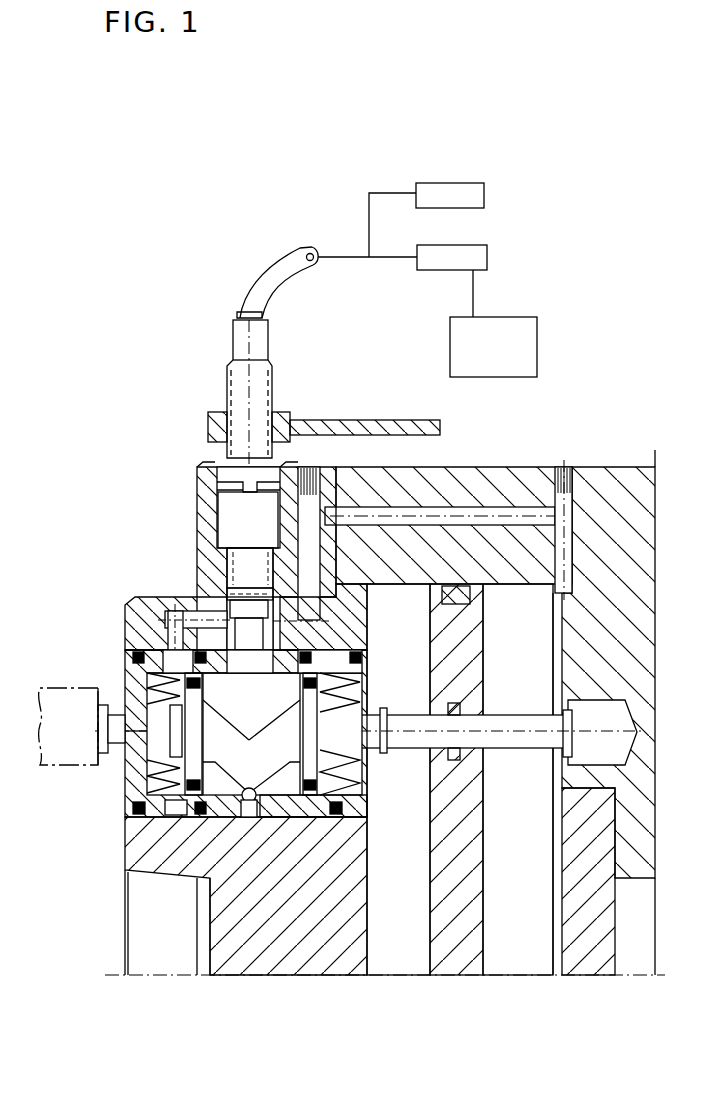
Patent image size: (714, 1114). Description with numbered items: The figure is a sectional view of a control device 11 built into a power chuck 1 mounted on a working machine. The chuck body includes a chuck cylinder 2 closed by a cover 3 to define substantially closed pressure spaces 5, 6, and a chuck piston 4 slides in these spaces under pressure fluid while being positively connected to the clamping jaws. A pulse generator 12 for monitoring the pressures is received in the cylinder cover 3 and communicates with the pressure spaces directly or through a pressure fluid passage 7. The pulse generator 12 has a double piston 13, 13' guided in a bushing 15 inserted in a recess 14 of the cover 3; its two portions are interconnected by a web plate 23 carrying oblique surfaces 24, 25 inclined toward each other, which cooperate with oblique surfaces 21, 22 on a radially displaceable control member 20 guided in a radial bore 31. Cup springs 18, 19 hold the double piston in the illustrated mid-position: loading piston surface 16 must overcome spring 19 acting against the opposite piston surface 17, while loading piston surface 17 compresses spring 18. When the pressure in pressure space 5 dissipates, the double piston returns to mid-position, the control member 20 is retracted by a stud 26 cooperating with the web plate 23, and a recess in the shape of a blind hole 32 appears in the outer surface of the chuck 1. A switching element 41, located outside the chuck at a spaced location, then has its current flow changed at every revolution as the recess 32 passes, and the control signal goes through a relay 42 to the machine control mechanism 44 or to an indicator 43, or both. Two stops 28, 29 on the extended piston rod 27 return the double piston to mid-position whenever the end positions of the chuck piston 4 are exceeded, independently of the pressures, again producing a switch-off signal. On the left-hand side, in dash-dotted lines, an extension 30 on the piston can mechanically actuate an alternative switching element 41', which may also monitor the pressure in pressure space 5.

The power chuck 1 is at (500, 467).
The chuck cylinder 2 is at (560, 467).
The cover 3 is at (330, 960).
The chuck piston 4 is at (456, 960).
The pressure space 5 is at (522, 960).
The pressure space 6 is at (401, 960).
The pressure fluid passage 7 is at (478, 508).
The control device 11 is at (180, 845).
The pulse generator 12 is at (243, 803).
The double piston 13 is at (372, 809).
The double piston 13' is at (120, 862).
The recess 14 is at (175, 810).
The bushing 15 is at (127, 775).
The piston surface 16 is at (310, 765).
The piston surface 17 is at (160, 690).
The cup spring 18 is at (340, 700).
The cup spring 19 is at (170, 790).
The control member 20 is at (215, 545).
The oblique surface 21 is at (257, 735).
The oblique surface 22 is at (243, 735).
The web plate 23 is at (290, 815).
The oblique surface 24 is at (325, 660).
The oblique surface 25 is at (200, 611).
The stud 26 is at (256, 803).
The extended piston rod 27 is at (517, 748).
The stop 28 is at (384, 710).
The stop 29 is at (560, 715).
The extension 30 is at (116, 714).
The radial bore 31 is at (235, 525).
The blind hole 32 is at (232, 482).
The switching element 41 is at (229, 352).
The switching element 41' is at (56, 693).
The relay 42 is at (489, 255).
The indicator 43 is at (486, 190).
The machine control mechanism 44 is at (539, 340).